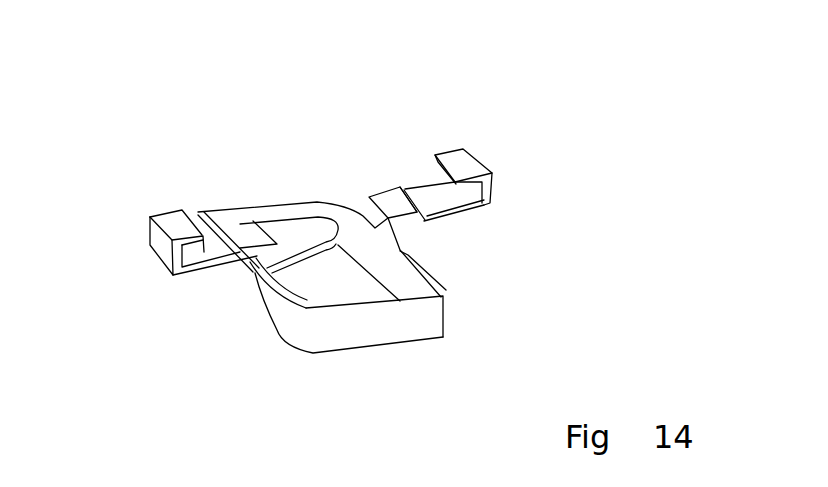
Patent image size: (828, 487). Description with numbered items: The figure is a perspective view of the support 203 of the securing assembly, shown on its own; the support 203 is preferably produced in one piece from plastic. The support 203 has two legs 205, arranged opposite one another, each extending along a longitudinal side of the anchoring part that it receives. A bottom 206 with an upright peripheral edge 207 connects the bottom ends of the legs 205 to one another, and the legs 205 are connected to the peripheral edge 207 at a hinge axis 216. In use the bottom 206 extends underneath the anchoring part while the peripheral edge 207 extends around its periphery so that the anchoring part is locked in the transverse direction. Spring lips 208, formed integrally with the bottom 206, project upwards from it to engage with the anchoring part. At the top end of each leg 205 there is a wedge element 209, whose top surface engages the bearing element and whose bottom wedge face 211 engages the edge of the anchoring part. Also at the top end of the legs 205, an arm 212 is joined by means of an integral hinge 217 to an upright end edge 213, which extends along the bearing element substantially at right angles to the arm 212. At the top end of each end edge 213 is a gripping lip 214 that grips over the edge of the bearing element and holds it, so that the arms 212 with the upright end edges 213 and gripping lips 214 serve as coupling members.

The support 203 is at (188, 115).
The legs 205 is at (276, 345).
The bottom 206 is at (405, 348).
The peripheral edge 207 is at (448, 292).
The spring lips 208 is at (305, 234).
The wedge element 209 is at (392, 200).
The bottom wedge face 211 is at (368, 205).
The arm 212 is at (190, 258).
The end edge 213 is at (158, 247).
The gripping lip 214 is at (180, 223).
The hinge axis 216 is at (238, 271).
The integral hinge 217 is at (457, 212).